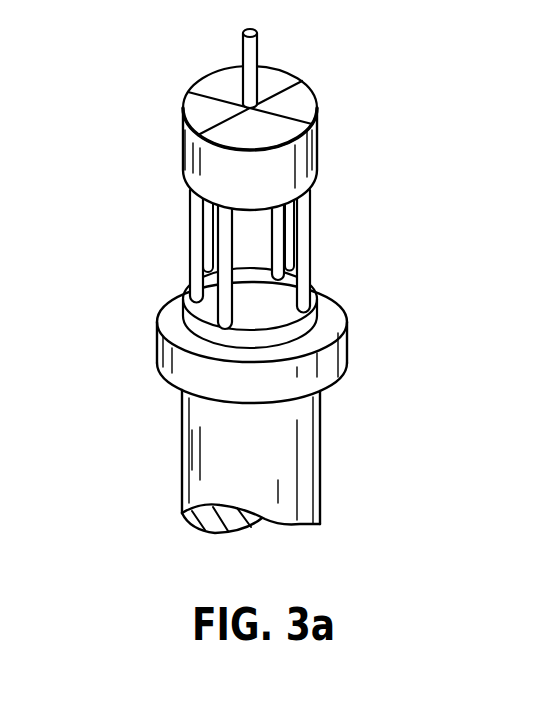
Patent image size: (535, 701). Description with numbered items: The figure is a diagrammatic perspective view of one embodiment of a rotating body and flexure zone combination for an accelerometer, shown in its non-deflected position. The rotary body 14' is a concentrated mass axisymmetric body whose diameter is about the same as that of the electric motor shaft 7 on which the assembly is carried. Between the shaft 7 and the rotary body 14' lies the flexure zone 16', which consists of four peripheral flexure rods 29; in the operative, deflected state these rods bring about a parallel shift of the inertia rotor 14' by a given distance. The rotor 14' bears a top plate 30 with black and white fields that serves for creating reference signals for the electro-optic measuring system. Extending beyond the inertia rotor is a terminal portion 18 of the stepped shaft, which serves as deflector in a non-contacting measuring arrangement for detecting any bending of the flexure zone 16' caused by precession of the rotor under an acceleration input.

The shaft 7 is at (307, 462).
The rotary body 14' is at (289, 159).
The flexure zone 16' is at (273, 207).
The terminal portion 18 is at (258, 43).
The peripheral flexure rods 29 is at (190, 245).
The top plate 30 is at (220, 68).